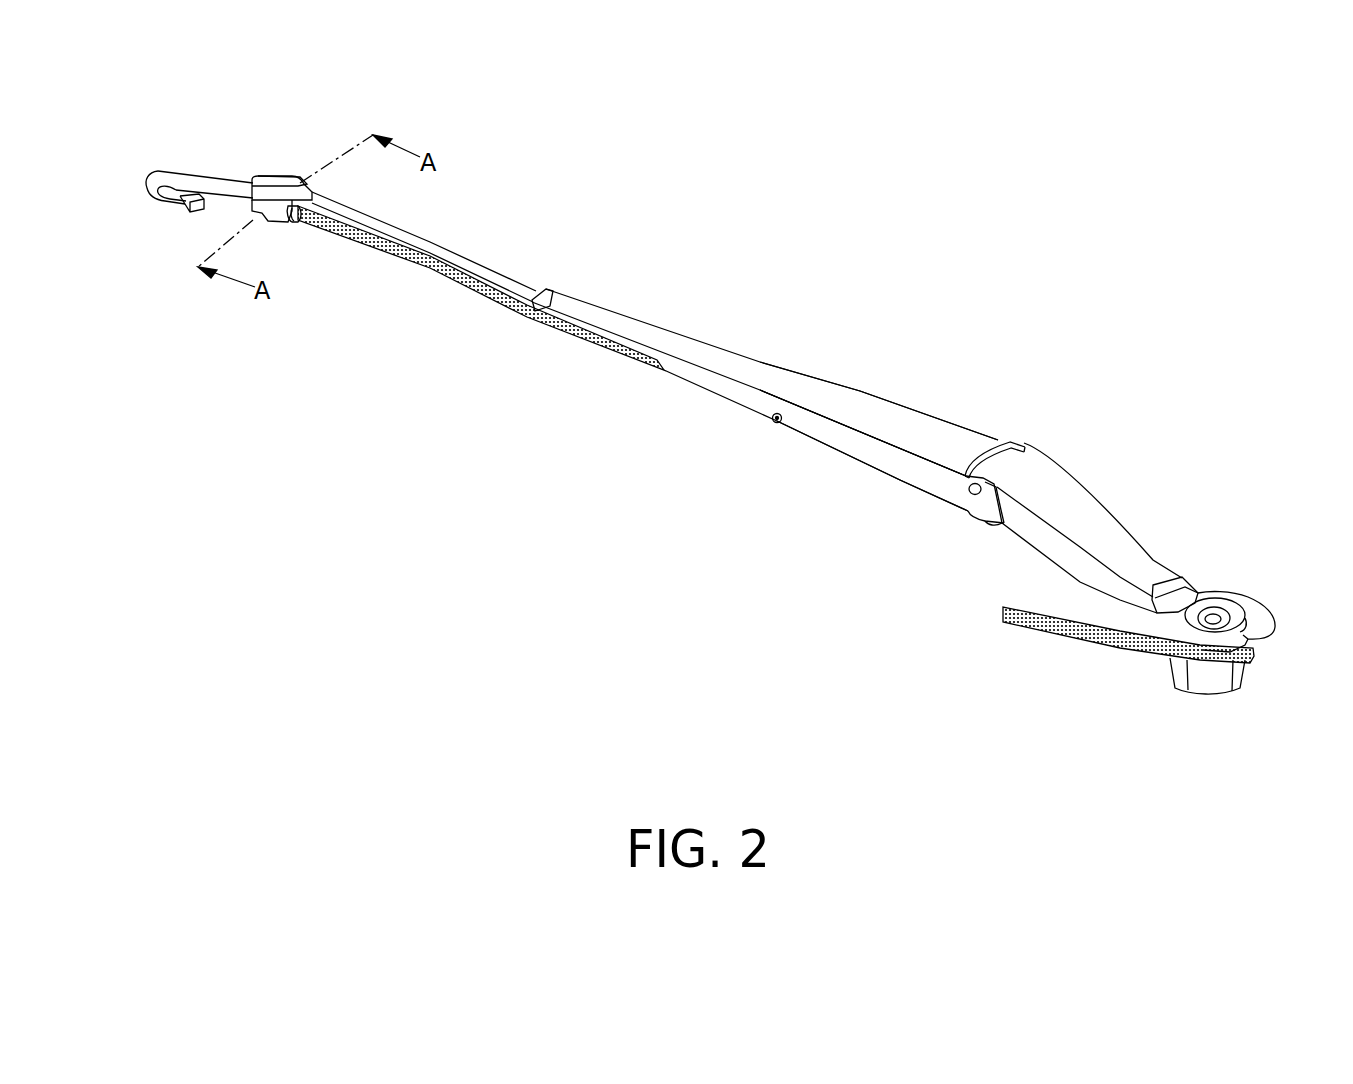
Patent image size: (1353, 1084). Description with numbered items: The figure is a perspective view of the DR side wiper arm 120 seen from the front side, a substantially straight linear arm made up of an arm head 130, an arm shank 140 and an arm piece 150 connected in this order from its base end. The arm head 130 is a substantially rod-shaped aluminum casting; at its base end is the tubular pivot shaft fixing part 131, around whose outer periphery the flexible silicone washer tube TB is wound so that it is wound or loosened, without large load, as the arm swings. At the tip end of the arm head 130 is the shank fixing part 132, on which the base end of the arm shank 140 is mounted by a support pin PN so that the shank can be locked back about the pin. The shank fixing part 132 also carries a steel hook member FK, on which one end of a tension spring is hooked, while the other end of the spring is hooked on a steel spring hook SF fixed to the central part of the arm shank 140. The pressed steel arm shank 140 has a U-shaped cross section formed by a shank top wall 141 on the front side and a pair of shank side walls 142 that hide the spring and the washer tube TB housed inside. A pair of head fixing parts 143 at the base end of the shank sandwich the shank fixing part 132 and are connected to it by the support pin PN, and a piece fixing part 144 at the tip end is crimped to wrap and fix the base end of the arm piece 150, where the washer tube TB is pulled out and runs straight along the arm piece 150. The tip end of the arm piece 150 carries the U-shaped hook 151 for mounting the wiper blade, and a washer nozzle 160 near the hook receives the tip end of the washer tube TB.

The DR side wiper arm 120 is at (705, 261).
The arm head 130 is at (1097, 527).
The pivot shaft fixing part 131 is at (1210, 673).
The shank fixing part 132 is at (993, 463).
The arm shank 140 is at (806, 373).
The shank top wall 141 is at (870, 417).
The shank side walls 142 is at (853, 445).
The head fixing parts 143 is at (1020, 450).
The piece fixing part 144 is at (563, 303).
The arm piece 150 is at (448, 254).
The U-shaped hook 151 is at (160, 207).
The washer nozzle 160 is at (278, 217).
The washer tube TB is at (452, 277).
The spring hook SF is at (771, 423).
The support pin PN is at (967, 491).
The hook member FK is at (981, 508).